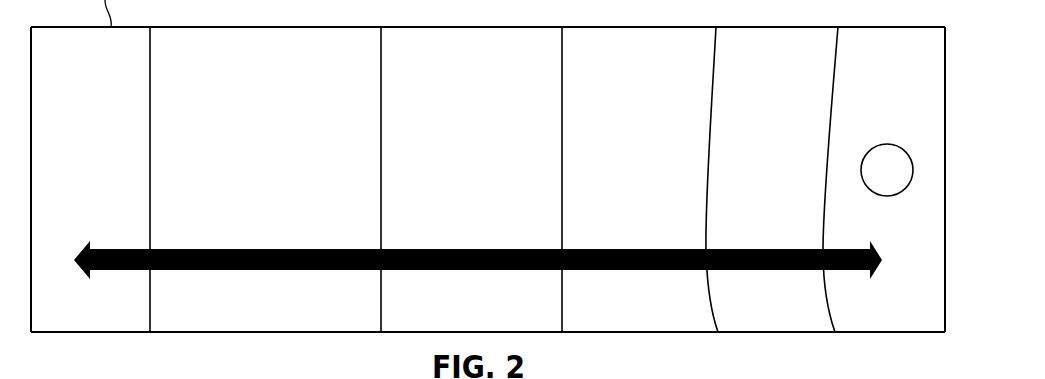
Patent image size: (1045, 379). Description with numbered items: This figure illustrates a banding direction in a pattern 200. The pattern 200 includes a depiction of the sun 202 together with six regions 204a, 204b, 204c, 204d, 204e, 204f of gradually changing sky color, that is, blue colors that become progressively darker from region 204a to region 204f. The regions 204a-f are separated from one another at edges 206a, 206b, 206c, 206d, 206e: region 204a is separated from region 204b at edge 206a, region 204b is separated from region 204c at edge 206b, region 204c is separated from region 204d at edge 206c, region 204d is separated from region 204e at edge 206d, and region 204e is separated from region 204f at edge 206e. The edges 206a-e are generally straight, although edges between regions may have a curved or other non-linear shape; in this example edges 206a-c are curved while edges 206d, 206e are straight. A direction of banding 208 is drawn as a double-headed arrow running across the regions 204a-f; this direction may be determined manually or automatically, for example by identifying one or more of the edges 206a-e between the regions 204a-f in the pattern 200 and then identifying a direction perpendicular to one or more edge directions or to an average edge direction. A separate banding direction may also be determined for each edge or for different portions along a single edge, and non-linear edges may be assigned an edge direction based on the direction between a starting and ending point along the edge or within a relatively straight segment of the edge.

The pattern 200 is at (95, 189).
The depiction of the sun 202 is at (907, 184).
The region 204a is at (915, 108).
The region 204b is at (793, 189).
The region 204c is at (660, 191).
The region 204d is at (493, 191).
The region 204e is at (292, 189).
The region 204f is at (118, 186).
The edge 206a is at (838, 56).
The edge 206b is at (714, 56).
The edge 206c is at (562, 56).
The edge 206d is at (381, 56).
The edge 206e is at (150, 56).
The direction of banding 208 is at (243, 270).